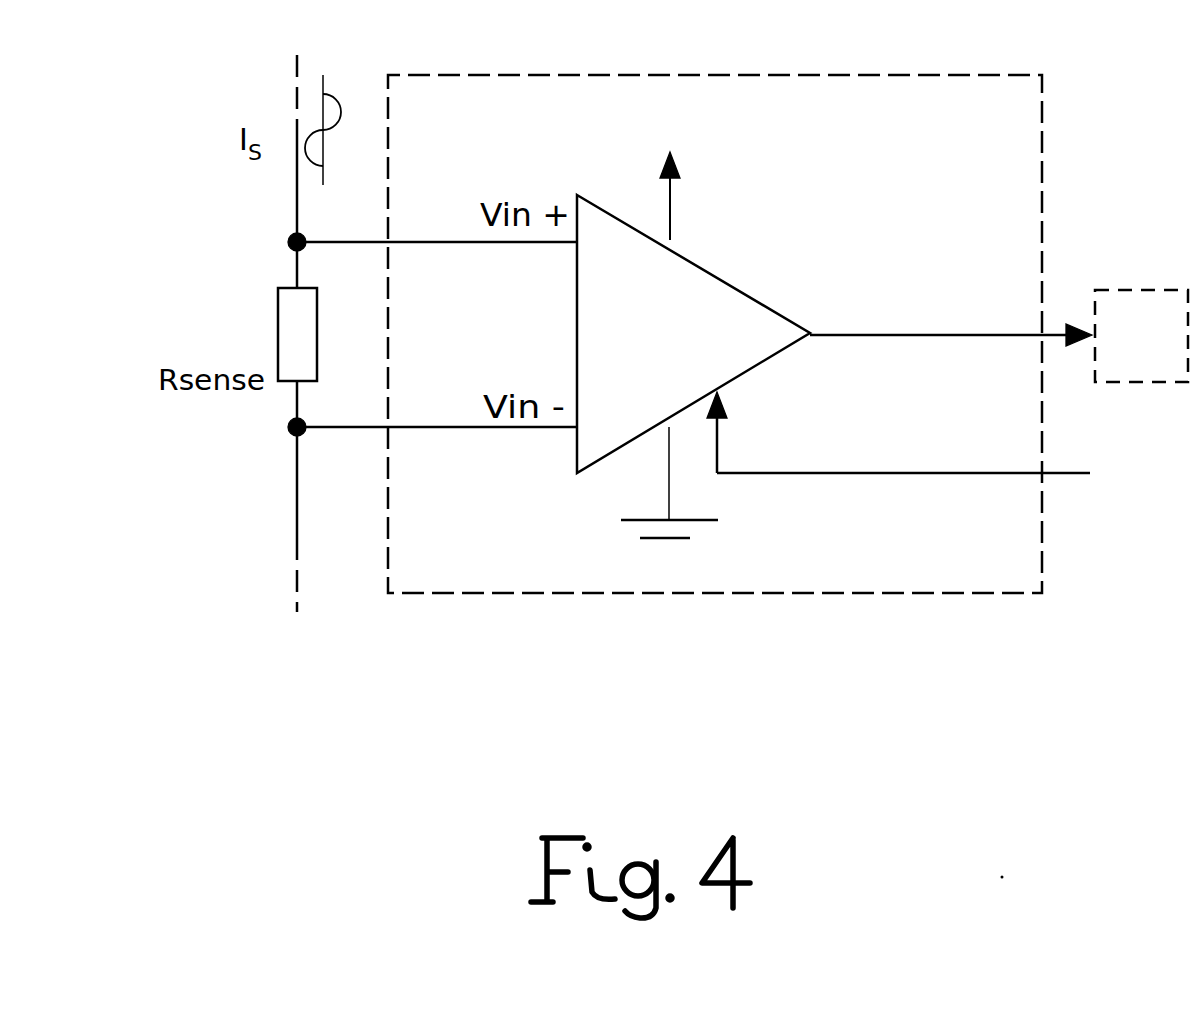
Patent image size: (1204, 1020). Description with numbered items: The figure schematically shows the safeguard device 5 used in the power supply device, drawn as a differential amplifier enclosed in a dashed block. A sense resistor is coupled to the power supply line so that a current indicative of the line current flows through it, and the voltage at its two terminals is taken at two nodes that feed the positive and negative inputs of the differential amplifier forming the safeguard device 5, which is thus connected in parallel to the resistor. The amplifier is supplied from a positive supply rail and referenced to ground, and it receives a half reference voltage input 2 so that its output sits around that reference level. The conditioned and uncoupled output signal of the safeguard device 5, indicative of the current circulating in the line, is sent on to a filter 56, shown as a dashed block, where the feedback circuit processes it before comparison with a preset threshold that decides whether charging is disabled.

The safeguard device 5 is at (777, 334).
The filter 56 is at (1141, 336).
The half reference voltage input Vr/ 2 is at (937, 441).